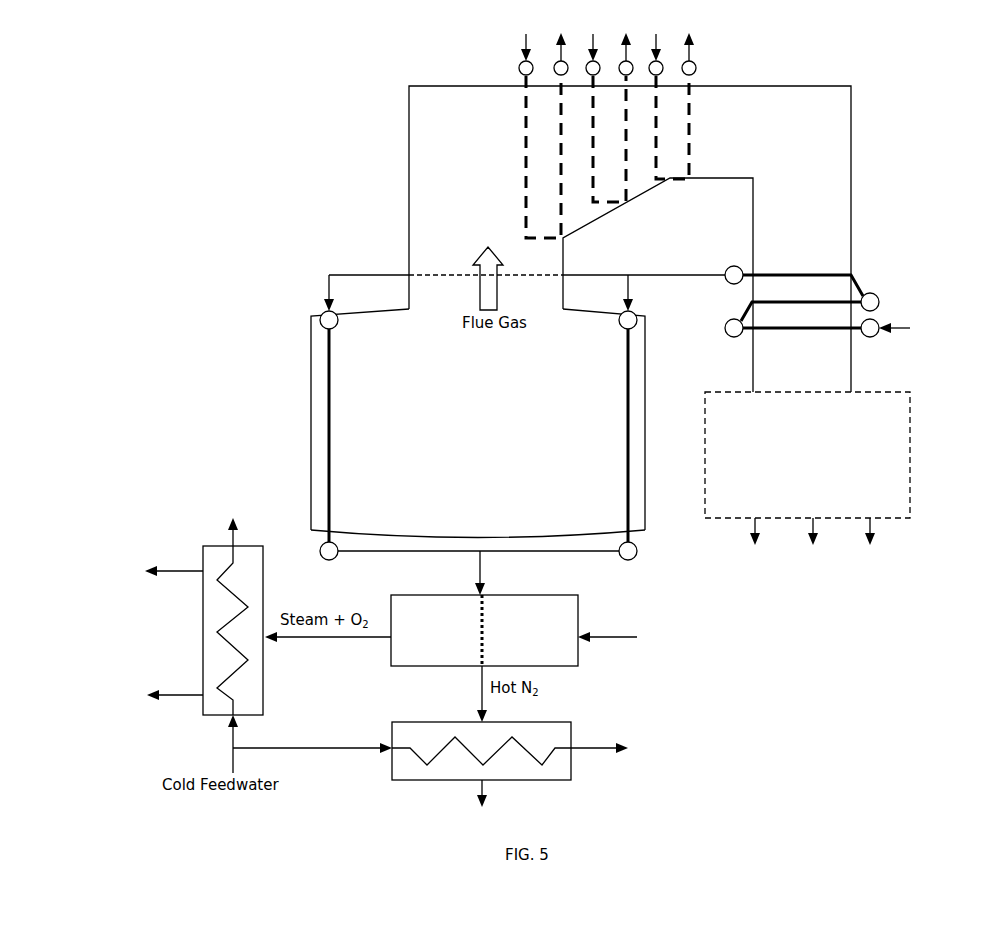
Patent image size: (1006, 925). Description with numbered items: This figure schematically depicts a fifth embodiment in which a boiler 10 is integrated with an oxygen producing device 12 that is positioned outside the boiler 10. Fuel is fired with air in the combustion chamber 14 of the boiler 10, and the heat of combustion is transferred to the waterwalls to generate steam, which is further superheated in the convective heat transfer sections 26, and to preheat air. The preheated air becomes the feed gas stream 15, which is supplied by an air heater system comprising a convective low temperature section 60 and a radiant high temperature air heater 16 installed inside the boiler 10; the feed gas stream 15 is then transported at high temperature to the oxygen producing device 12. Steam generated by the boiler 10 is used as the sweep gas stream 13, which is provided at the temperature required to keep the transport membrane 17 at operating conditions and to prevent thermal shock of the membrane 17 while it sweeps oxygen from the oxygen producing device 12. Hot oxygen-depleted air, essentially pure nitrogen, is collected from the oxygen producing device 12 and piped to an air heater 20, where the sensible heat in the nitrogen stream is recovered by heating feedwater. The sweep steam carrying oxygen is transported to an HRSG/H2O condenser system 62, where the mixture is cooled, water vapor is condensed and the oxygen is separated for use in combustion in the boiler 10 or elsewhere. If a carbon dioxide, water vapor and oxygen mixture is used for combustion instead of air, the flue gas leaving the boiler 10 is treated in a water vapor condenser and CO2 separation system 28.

The boiler 10 is at (790, 78).
The oxygen producing device 12 is at (578, 615).
The sweep gas stream 13 is at (617, 635).
The combustion chamber 14 is at (498, 521).
The feed gas stream 15 is at (472, 572).
The high temperature air heater 16 is at (330, 403).
The transport membrane 17 is at (484, 627).
The air heater 20 is at (573, 732).
The convective heat transfer sections 26 is at (694, 62).
The water vapor condenser and CO2 separation system 28 is at (816, 490).
The convective (low temperature) section 60 is at (826, 275).
The HRSG/H2O condenser system 62 is at (203, 629).